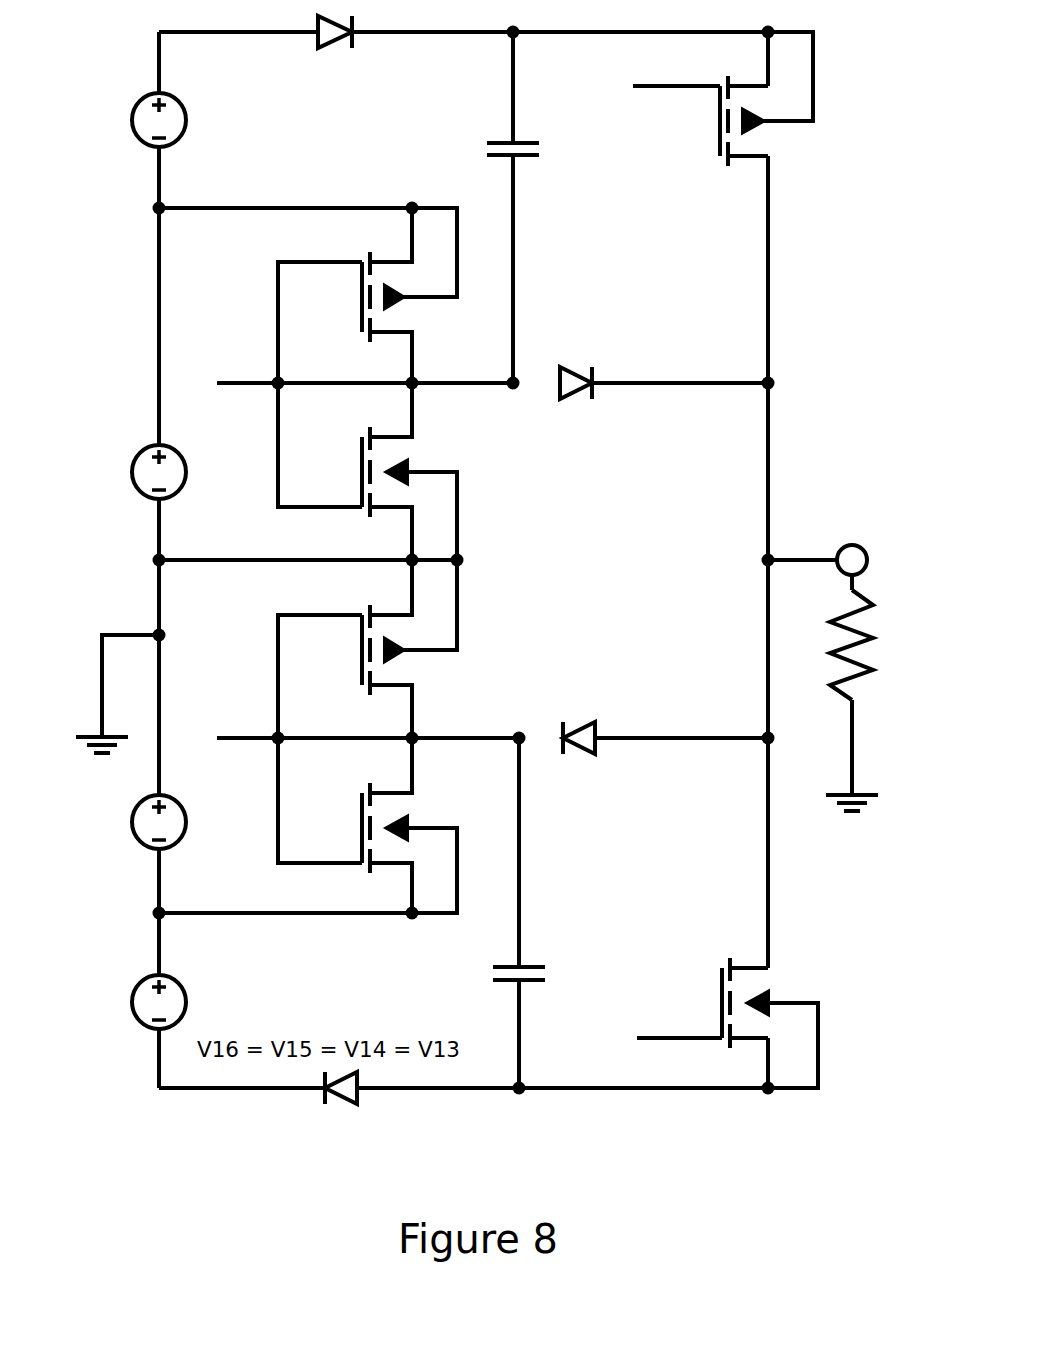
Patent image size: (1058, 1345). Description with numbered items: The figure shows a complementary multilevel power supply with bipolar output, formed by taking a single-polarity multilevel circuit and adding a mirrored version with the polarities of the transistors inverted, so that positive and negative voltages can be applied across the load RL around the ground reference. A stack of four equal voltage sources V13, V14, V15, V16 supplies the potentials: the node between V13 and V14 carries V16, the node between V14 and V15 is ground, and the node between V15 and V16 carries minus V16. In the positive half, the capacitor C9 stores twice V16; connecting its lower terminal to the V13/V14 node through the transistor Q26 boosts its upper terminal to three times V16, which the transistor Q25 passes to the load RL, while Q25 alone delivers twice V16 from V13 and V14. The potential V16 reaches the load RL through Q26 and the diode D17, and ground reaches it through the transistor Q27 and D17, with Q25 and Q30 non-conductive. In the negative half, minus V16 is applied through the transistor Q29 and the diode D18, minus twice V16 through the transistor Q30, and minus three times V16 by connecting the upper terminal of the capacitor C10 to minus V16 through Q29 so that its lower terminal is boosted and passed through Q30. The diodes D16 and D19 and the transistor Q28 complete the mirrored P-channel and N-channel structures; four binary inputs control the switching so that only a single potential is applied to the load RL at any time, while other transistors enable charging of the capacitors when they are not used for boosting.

The voltage source V13 is at (133, 120).
The voltage source V14 is at (133, 472).
The voltage source V15 is at (186, 822).
The voltage source V16 is at (186, 1002).
The diode D16 is at (338, 46).
The diode D17 is at (577, 398).
The diode D18 is at (579, 753).
The diode D19 is at (340, 1103).
The capacitor C9 is at (523, 130).
The capacitor C10 is at (532, 991).
The transistor Q25 is at (700, 121).
The transistor Q26 is at (345, 295).
The transistor Q27 is at (367, 471).
The transistor Q28 is at (367, 649).
The transistor Q29 is at (367, 825).
The transistor Q30 is at (727, 1023).
The load RL is at (832, 645).